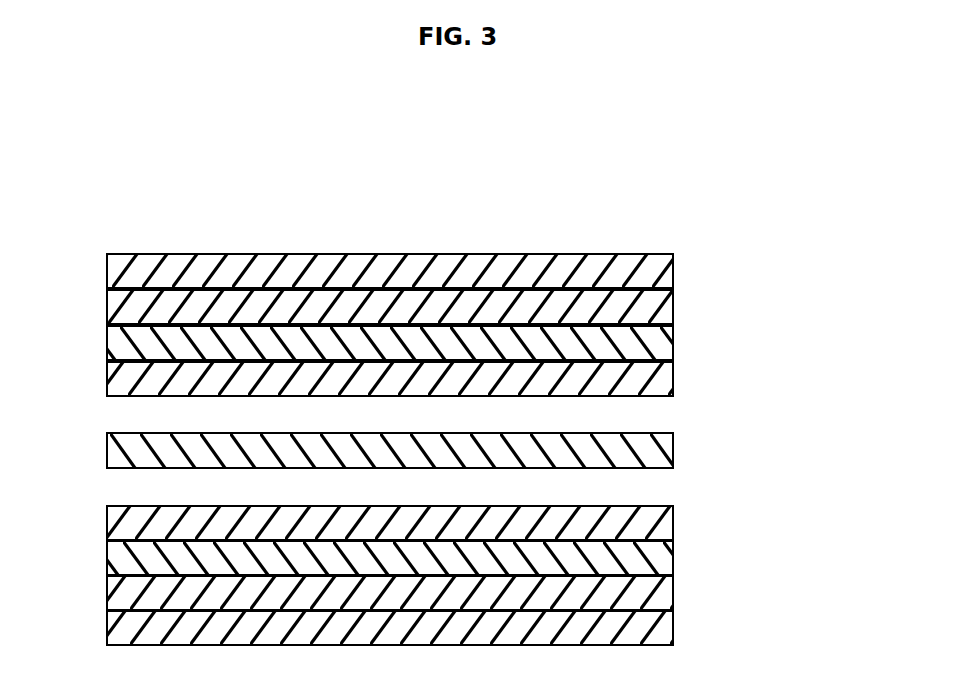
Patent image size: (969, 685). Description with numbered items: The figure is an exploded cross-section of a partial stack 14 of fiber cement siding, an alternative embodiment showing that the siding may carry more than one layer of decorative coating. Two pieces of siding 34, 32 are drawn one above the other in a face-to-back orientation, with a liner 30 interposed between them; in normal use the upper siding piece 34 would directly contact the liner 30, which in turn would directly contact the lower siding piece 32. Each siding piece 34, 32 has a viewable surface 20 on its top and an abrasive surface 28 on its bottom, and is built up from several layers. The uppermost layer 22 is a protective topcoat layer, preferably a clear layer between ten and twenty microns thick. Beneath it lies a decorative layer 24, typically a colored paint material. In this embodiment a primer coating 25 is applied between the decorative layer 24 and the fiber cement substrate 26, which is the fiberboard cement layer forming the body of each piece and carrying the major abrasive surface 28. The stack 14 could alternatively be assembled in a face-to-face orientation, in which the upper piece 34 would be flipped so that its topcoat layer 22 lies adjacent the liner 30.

The partial stack 14 is at (228, 218).
The viewable surface 20 is at (468, 252).
The protective topcoat layer 22 is at (107, 272).
The decorative layer 24 is at (107, 305).
The primer coating 25 is at (107, 342).
The fiber cement substrate 26 is at (107, 378).
The abrasive surface 28 is at (588, 399).
The liner 30 is at (107, 450).
The siding piece 32 is at (742, 578).
The siding piece 34 is at (744, 327).